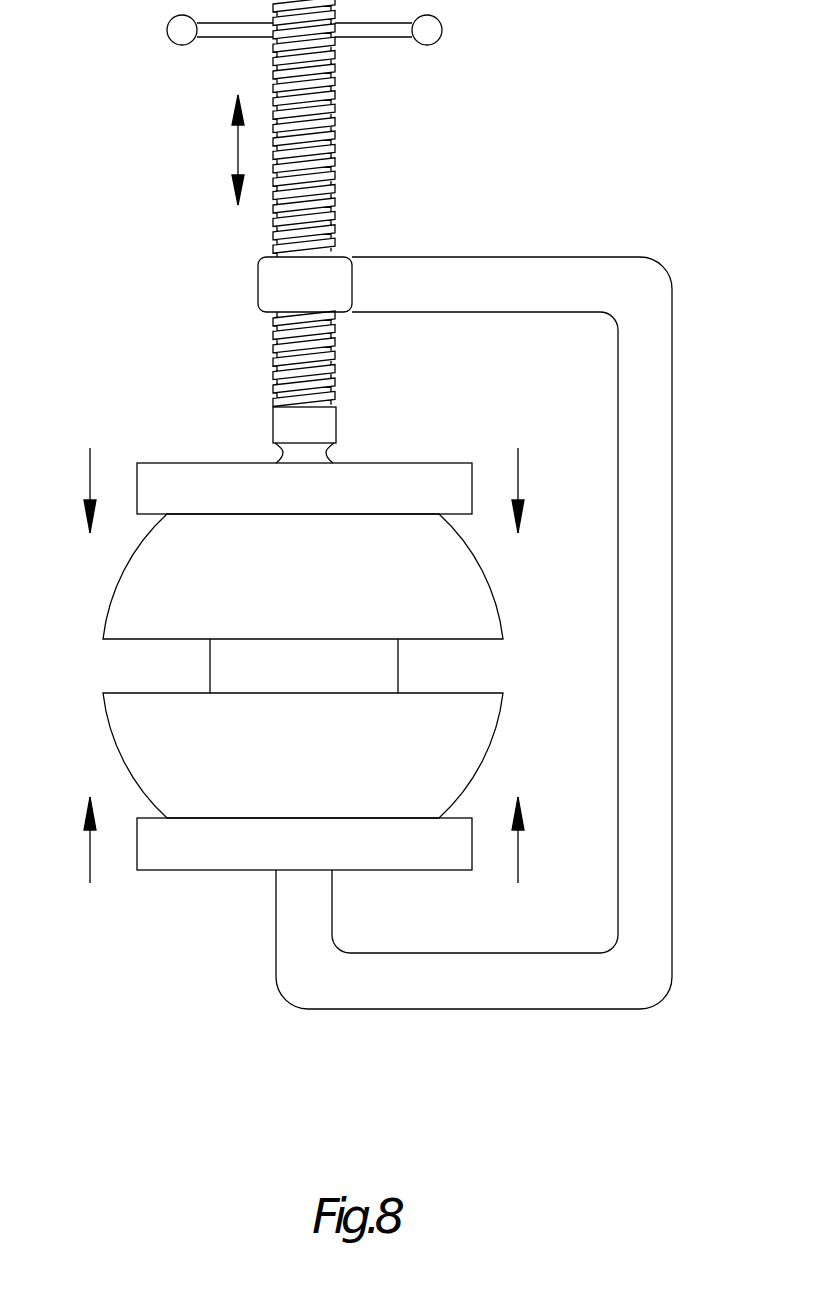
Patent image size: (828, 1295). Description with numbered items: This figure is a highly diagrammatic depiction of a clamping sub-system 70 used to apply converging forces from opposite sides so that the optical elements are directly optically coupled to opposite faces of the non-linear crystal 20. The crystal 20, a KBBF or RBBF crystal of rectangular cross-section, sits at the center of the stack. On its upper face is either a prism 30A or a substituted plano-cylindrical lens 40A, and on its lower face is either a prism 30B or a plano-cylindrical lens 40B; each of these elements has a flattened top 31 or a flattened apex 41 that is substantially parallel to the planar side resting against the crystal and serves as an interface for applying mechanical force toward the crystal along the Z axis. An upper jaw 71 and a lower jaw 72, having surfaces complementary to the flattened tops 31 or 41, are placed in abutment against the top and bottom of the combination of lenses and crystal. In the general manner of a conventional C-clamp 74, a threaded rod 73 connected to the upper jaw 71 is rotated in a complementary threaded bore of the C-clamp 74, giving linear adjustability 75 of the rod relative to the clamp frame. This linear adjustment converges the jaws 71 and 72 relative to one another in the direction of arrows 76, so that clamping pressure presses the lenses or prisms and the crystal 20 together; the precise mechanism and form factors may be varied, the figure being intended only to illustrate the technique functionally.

The clamp fixture 70 is at (597, 188).
The jaw 71 is at (193, 463).
The jaw 72 is at (205, 865).
The threaded rod 73 is at (337, 113).
The C-clamp 74 is at (653, 483).
The linear adjustability 75 is at (238, 147).
The arrows 76 is at (88, 478).
The non-linear crystal 20 is at (304, 666).
The prism 30A is at (351, 576).
The plano-cylindrical lens 40A is at (351, 576).
The prism 30B is at (351, 755).
The plano-cylindrical lens 40B is at (510, 767).
The flattened top 31 is at (398, 514).
The apex 41 is at (351, 576).